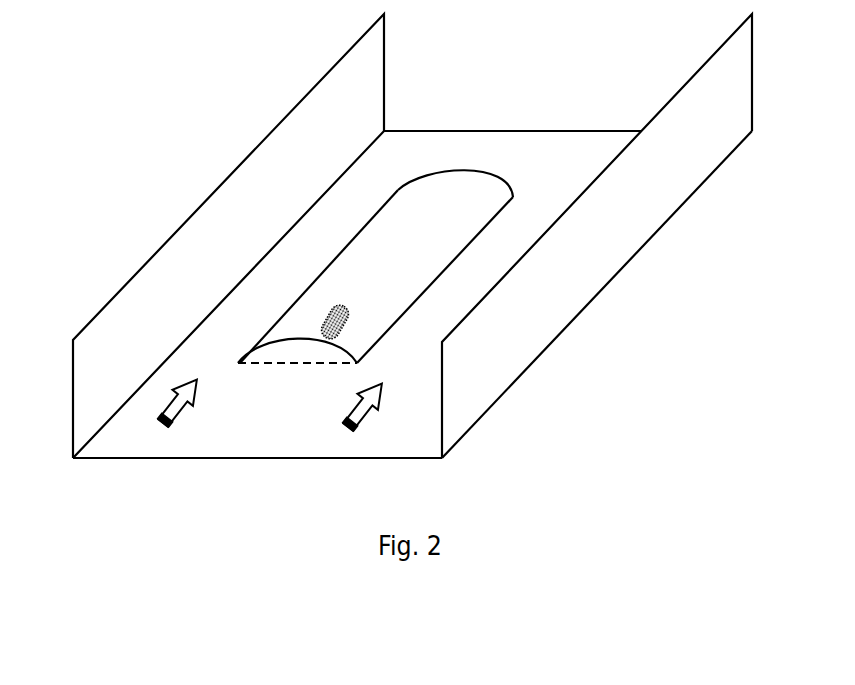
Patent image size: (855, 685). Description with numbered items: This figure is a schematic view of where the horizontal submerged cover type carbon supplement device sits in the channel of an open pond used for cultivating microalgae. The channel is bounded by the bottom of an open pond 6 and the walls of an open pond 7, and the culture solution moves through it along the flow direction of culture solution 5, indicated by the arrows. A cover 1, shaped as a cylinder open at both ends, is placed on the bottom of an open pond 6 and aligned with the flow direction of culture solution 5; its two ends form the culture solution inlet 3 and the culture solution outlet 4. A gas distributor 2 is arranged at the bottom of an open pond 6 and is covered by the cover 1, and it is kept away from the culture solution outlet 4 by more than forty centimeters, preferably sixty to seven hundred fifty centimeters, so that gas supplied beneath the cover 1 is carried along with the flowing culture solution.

The cover 1 is at (385, 259).
The gas distributor 2 is at (352, 322).
The culture solution inlet 3 is at (301, 350).
The culture solution outlet 4 is at (448, 183).
The flow direction of culture solution 5 is at (348, 412).
The bottom of an open pond 6 is at (243, 459).
The wall of an open pond 7 is at (77, 360).